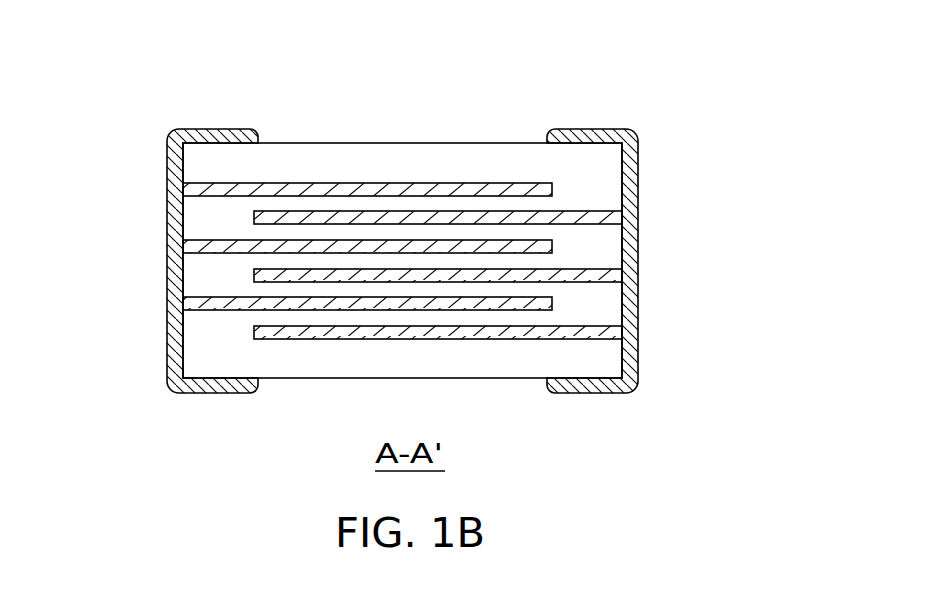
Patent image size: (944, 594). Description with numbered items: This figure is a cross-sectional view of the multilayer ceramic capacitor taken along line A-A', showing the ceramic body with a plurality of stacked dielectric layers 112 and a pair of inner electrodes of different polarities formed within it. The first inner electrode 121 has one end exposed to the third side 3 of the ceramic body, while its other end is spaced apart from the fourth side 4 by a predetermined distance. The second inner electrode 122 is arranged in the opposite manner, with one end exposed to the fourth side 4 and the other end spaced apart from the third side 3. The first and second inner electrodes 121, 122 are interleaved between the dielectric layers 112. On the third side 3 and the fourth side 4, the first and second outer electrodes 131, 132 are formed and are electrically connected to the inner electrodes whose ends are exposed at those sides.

The third side 3 is at (152, 322).
The fourth side 4 is at (650, 190).
The dielectric layer 112 is at (528, 260).
The first inner electrode 121 is at (225, 243).
The second inner electrode 122 is at (598, 278).
The first outer electrode 131 is at (215, 130).
The second outer electrode 132 is at (594, 128).